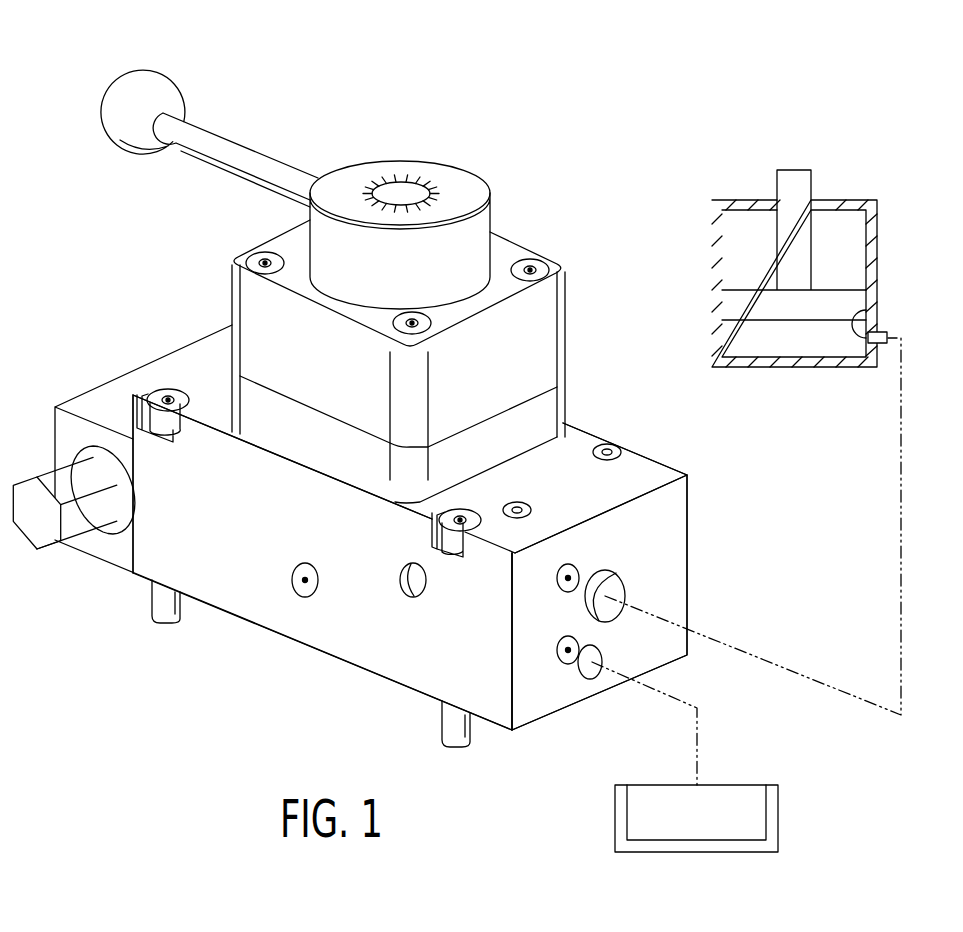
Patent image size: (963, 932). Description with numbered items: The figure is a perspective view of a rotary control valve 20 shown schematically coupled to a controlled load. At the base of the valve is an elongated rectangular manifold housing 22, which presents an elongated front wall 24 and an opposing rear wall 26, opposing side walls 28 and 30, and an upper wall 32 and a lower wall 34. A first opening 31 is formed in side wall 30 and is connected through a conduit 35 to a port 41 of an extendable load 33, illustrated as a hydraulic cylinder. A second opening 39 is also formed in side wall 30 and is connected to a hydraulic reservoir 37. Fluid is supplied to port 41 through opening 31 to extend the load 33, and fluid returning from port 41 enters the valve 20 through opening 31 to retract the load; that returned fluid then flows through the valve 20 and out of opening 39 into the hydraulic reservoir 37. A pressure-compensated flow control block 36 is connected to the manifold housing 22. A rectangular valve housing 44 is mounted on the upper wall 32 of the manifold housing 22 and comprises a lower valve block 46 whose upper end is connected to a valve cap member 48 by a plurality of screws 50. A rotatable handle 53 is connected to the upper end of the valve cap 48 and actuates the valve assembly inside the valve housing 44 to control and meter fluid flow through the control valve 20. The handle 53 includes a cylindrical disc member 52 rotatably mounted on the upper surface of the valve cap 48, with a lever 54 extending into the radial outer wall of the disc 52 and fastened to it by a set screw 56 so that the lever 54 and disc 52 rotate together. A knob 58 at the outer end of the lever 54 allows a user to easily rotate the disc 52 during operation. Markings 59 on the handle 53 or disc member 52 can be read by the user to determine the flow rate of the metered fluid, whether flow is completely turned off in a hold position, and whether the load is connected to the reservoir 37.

The rotary control valve 20 is at (598, 170).
The manifold housing 22 is at (667, 456).
The front wall 24 is at (347, 632).
The rear wall 26 is at (604, 442).
The side wall 28 is at (187, 362).
The side wall 30 is at (668, 563).
The first opening 31 is at (611, 565).
The upper wall 32 is at (567, 467).
The extendable load 33 is at (710, 228).
The lower wall 34 is at (258, 628).
The conduit 35 is at (896, 498).
The pressure-compensated flow control block 36 is at (102, 382).
The hydraulic reservoir 37 is at (780, 821).
The second opening 39 is at (596, 642).
The port 41 is at (855, 320).
The valve housing 44 is at (568, 303).
The lower valve block 46 is at (335, 448).
The valve cap member 48 is at (497, 238).
The screws 50 is at (264, 253).
The cylindrical disc member 52 is at (430, 163).
The rotatable handle 53 is at (228, 122).
The lever 54 is at (292, 155).
The set screw 56 is at (402, 187).
The knob 58 is at (143, 68).
The markings 59 is at (446, 190).